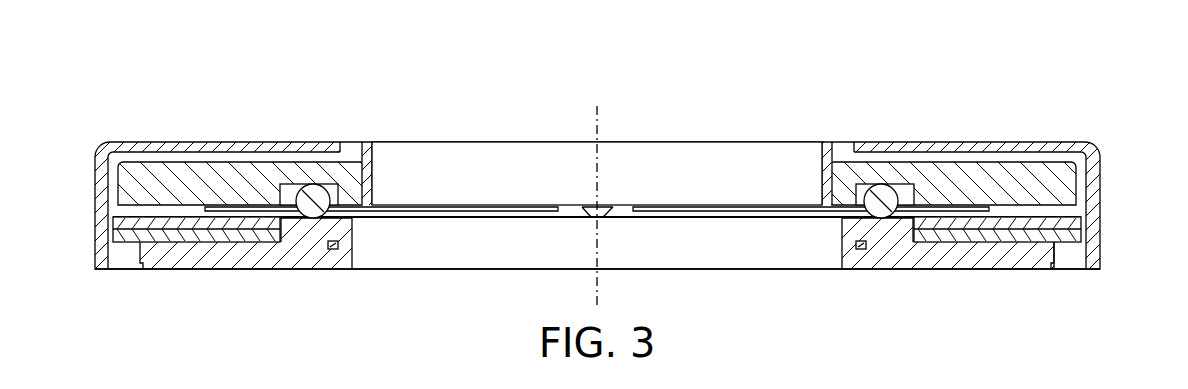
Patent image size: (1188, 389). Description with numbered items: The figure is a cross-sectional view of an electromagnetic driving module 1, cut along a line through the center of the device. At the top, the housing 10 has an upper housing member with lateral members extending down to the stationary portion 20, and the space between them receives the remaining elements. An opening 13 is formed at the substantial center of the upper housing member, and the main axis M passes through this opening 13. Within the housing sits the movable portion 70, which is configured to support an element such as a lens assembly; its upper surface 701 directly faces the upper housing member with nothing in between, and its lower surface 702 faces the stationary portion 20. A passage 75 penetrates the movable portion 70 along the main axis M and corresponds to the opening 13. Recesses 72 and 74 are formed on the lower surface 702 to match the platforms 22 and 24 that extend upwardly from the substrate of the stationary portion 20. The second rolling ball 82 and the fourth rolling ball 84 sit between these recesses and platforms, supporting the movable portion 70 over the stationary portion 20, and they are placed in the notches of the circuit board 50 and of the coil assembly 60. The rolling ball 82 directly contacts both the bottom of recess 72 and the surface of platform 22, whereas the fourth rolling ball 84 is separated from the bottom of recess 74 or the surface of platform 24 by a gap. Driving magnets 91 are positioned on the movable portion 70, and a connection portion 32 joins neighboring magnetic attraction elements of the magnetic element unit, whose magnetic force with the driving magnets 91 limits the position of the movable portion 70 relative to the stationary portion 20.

The electromagnetic driving module 1 is at (68, 80).
The housing 10 is at (1098, 158).
The opening 13 is at (351, 138).
The stationary portion 20 is at (1020, 255).
The platform 22 is at (302, 230).
The platform 24 is at (893, 232).
The connection portion 32 is at (861, 249).
The circuit board 50 is at (1066, 264).
The coil assembly 60 is at (1075, 225).
The movable portion 70 is at (1070, 183).
The upper surface 701 is at (203, 160).
The lower surface 702 is at (178, 207).
The recess 72 is at (292, 184).
The recess 74 is at (905, 184).
The passage 75 is at (481, 156).
The second rolling ball 82 is at (313, 203).
The fourth rolling ball 84 is at (883, 203).
The driving magnet 91 is at (716, 207).
The main axis M is at (597, 194).